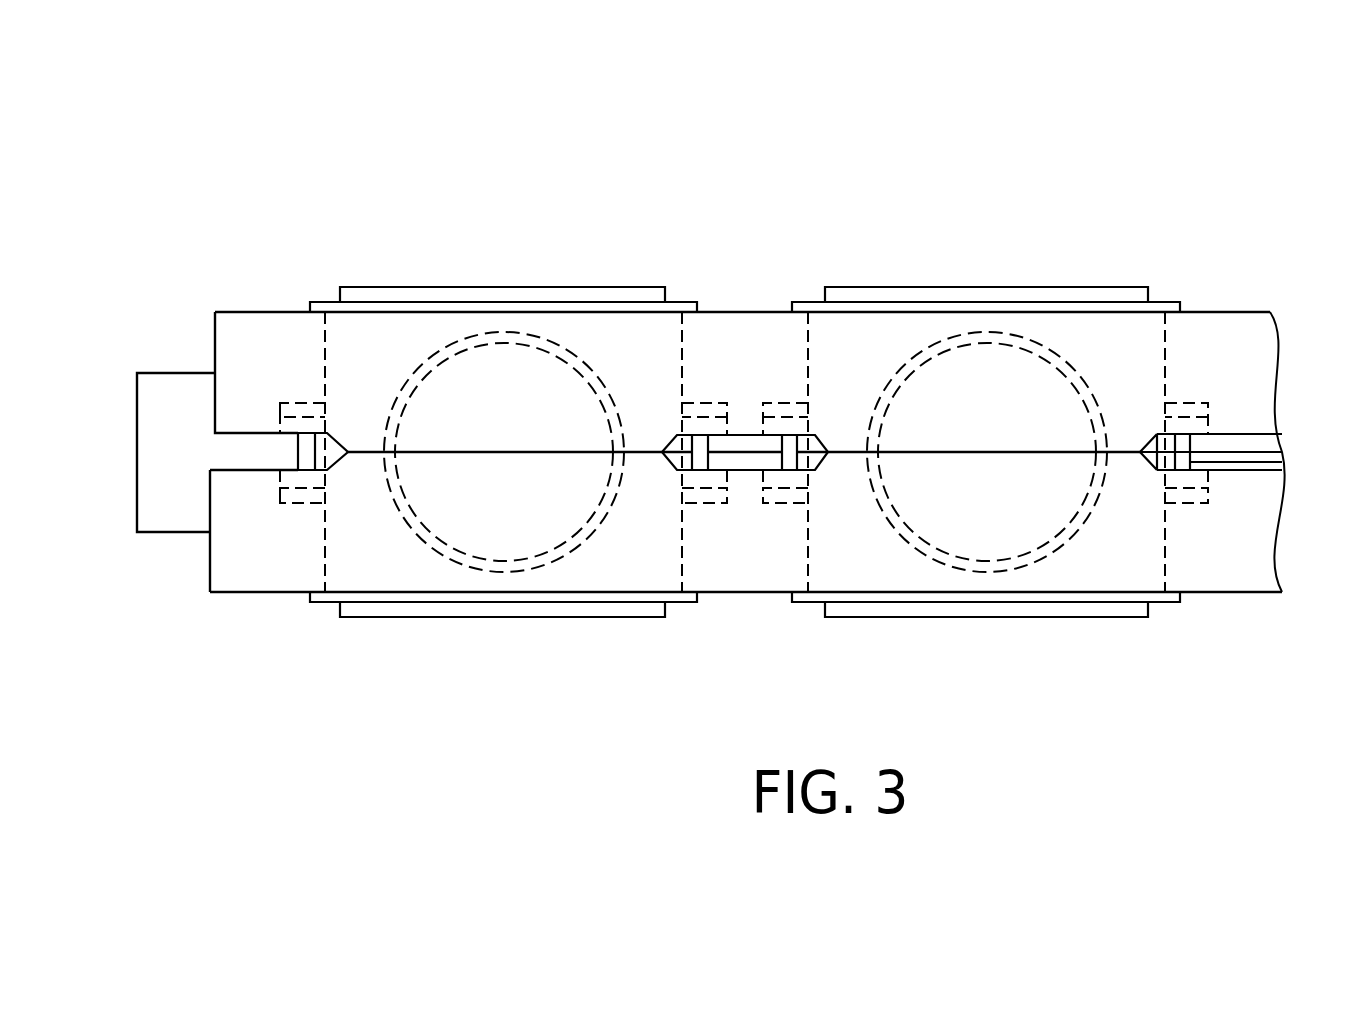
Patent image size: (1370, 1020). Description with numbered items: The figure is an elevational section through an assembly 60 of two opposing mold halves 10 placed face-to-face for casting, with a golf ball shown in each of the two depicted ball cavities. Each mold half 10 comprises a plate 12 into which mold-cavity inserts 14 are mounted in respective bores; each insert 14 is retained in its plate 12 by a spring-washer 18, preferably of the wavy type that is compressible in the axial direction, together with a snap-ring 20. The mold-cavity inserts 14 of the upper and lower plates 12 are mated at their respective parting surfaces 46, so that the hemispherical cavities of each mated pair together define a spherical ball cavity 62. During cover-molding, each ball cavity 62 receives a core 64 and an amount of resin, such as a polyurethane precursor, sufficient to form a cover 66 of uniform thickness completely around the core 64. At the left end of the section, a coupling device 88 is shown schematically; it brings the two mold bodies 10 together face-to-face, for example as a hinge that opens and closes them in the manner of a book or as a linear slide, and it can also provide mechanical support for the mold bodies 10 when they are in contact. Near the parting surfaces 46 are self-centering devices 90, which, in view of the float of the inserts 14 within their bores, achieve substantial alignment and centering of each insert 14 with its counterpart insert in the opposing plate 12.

The mold half 10 is at (1256, 300).
The plate 12 is at (250, 340).
The mold-cavity insert 14 is at (398, 340).
The spring-washer 18 is at (292, 398).
The snap-ring 20 is at (682, 307).
The parting surface 46 is at (638, 452).
The assembly 60 is at (1122, 165).
The ball cavity 62 is at (565, 344).
The core 64 is at (498, 380).
The cover 66 is at (532, 344).
The coupling device 88 is at (137, 505).
The self-centering device 90 is at (300, 455).